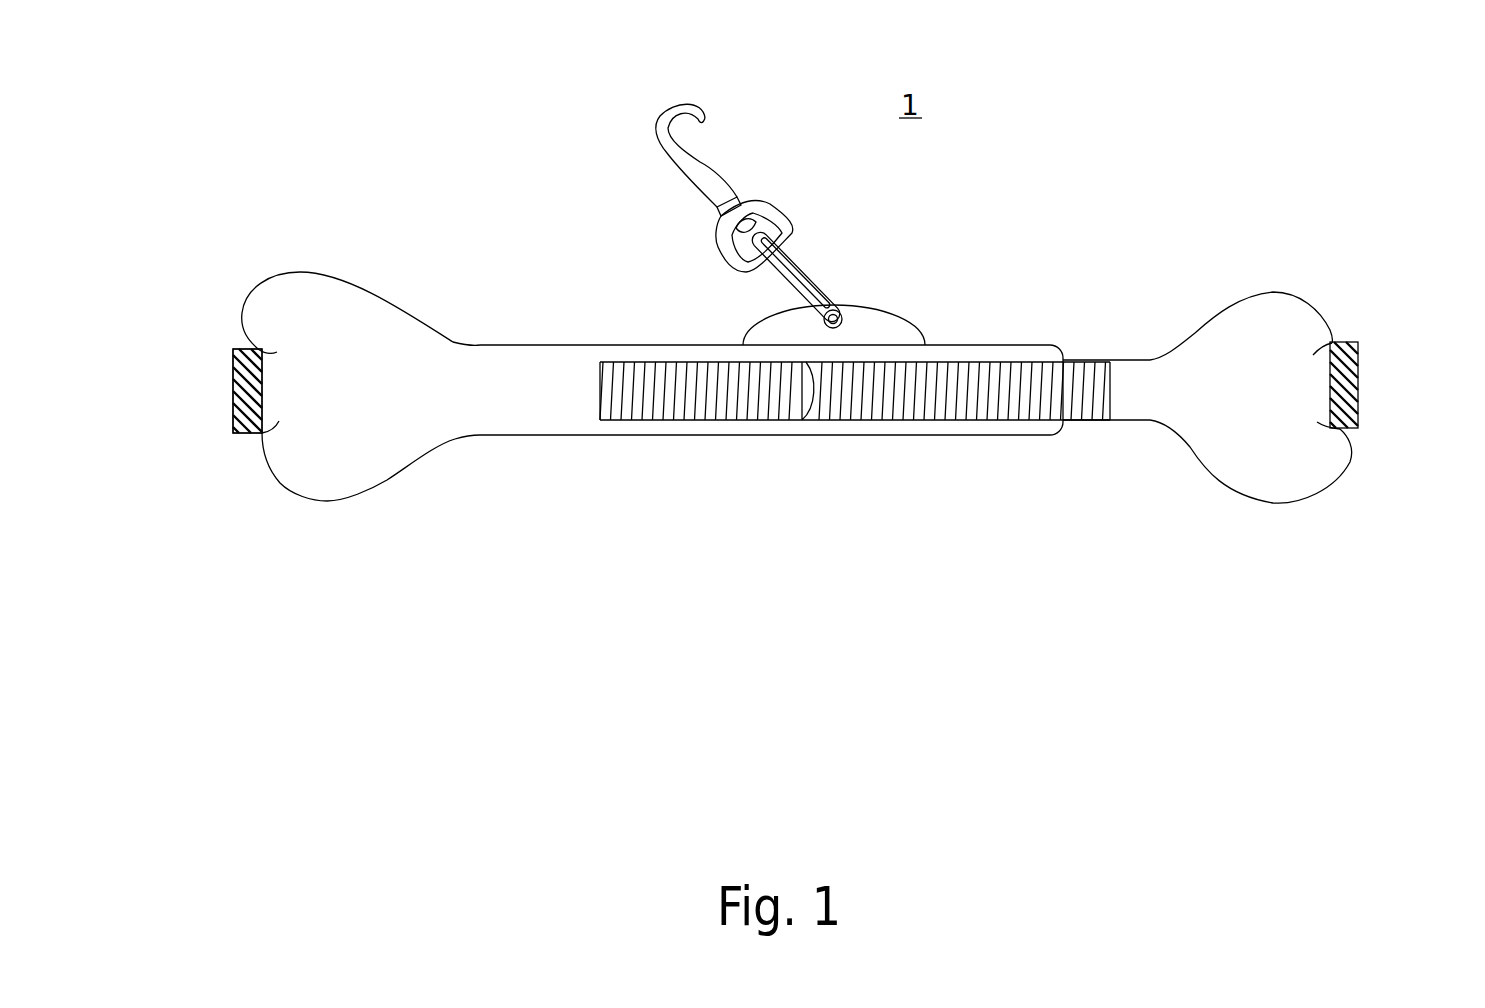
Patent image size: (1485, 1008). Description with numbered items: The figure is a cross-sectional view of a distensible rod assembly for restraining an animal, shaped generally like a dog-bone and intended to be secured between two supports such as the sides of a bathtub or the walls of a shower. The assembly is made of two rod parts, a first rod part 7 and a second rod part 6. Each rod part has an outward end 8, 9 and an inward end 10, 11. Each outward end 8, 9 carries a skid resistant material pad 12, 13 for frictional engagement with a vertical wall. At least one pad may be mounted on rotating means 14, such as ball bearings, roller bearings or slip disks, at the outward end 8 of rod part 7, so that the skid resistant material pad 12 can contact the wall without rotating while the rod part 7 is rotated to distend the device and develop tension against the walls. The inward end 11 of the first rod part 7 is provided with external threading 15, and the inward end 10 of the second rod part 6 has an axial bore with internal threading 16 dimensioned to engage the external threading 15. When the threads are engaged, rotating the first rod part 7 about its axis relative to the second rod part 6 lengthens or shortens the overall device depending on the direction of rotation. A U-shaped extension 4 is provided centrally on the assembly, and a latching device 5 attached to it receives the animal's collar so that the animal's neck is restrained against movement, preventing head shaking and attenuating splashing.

The U-shaped extension 4 is at (866, 329).
The latching device 5 is at (693, 105).
The second rod part 6 is at (528, 345).
The first rod part 7 is at (1137, 422).
The outward end 8 is at (1303, 292).
The outward end 9 is at (267, 467).
The inward end 10 is at (1060, 345).
The inward end 11 is at (801, 407).
The skid resistant material pad 12 is at (1358, 383).
The skid resistant material pad 13 is at (235, 393).
The rotating means 14 is at (260, 350).
The external threading 15 is at (913, 407).
The internal threading 16 is at (697, 415).